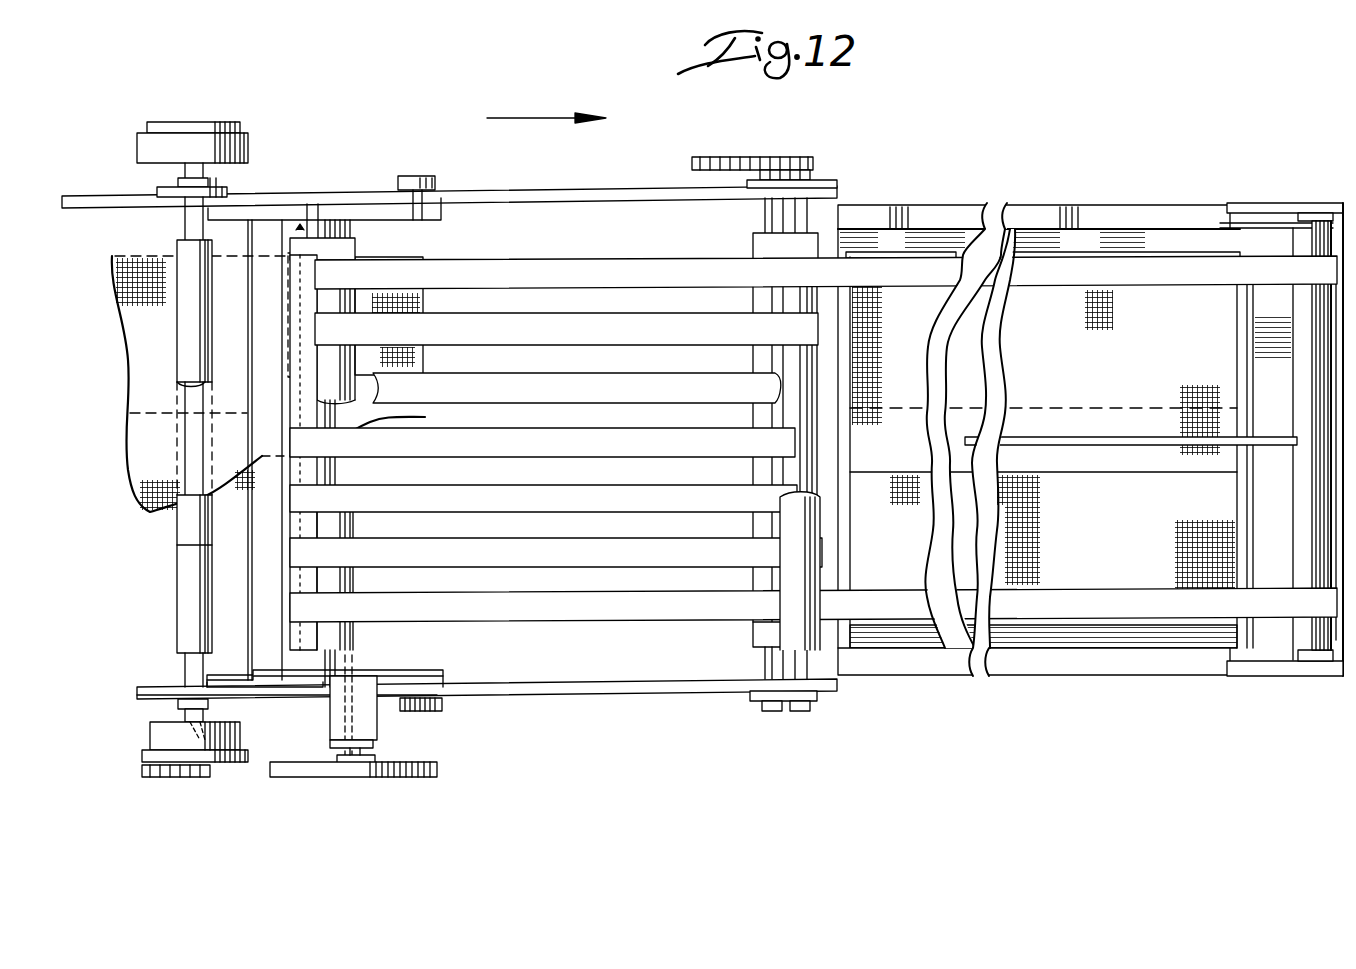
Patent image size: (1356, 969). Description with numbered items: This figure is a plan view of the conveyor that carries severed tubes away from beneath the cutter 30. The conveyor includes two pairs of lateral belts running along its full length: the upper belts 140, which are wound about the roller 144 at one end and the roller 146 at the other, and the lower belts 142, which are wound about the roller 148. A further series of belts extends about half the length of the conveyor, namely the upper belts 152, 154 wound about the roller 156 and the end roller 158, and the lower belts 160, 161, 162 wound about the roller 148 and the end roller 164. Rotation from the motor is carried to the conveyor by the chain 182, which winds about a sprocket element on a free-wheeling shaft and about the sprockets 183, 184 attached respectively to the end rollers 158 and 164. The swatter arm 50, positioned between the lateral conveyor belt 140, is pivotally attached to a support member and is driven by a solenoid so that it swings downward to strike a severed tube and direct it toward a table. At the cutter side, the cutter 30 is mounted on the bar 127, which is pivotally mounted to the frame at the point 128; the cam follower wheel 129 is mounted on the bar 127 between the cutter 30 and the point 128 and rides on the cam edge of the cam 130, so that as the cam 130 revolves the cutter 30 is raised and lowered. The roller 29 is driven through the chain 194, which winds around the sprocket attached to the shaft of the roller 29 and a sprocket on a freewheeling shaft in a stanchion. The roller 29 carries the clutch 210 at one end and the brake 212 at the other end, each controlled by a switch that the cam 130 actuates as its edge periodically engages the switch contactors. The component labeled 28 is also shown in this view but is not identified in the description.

The shaft 28 is at (190, 328).
The roller 29 is at (190, 548).
The cutter 30 is at (262, 430).
The swatter arm 50 is at (1067, 438).
The bar 127 is at (380, 668).
The pivot point 128 is at (440, 706).
The cam follower wheel 129 is at (375, 768).
The cam 130 is at (410, 778).
The upper conveyor belts 140 is at (1308, 274).
The lower conveyor belts 142 is at (319, 186).
The roller 144 is at (320, 248).
The roller 146 is at (1310, 375).
The roller 148 is at (305, 590).
The upper conveyor belt 152 is at (680, 326).
The upper conveyor belt 154 is at (697, 545).
The roller 156 is at (355, 505).
The end roller 158 is at (810, 520).
The lower conveyor belt 160 is at (588, 390).
The lower conveyor belt 161 is at (665, 443).
The lower conveyor belt 162 is at (632, 500).
The end roller 164 is at (778, 467).
The chain 182 is at (725, 158).
The sprocket 183 is at (765, 158).
The sprocket 184 is at (795, 158).
The chain 194 is at (173, 777).
The clutch 210 is at (232, 758).
The brake 212 is at (240, 140).